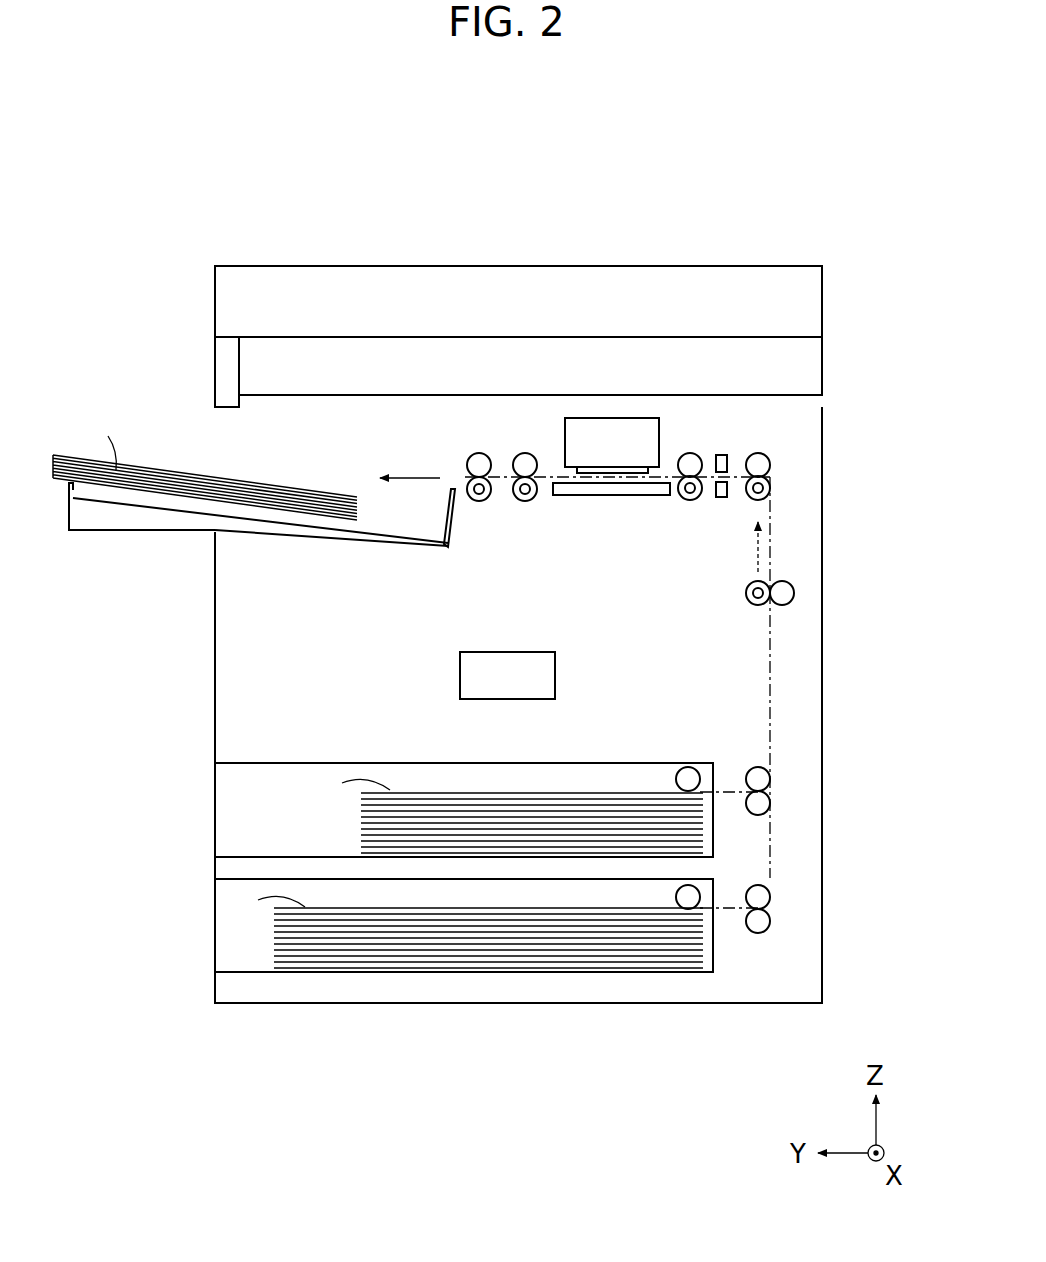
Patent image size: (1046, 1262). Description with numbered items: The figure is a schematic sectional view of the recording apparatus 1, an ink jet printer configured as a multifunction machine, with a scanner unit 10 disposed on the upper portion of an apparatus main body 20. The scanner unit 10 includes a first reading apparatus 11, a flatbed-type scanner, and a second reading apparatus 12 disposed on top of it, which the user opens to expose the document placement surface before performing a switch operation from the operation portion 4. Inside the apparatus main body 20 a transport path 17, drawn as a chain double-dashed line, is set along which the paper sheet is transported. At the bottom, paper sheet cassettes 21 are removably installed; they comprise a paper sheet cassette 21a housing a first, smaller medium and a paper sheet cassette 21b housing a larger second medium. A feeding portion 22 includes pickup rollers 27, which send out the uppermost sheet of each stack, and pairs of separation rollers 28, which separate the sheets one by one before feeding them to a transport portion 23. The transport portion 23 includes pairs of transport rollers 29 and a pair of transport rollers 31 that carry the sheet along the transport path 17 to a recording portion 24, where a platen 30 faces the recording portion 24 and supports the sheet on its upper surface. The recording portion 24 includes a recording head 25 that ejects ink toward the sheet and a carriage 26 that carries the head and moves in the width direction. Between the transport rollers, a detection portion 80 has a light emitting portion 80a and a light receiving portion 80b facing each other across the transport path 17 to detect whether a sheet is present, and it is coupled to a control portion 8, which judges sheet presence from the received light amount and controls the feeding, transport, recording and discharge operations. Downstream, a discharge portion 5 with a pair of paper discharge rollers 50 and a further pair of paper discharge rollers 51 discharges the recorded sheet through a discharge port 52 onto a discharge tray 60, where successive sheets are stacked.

The recording apparatus 1 is at (832, 145).
The operation portion 4 is at (220, 360).
The discharge portion 5 is at (505, 552).
The control portion 8 is at (548, 672).
The scanner unit 10 is at (898, 312).
The first reading apparatus 11 is at (822, 358).
The second reading apparatus 12 is at (822, 322).
The transport path 17 is at (770, 660).
The apparatus main body 20 is at (822, 556).
The paper sheet cassettes 21 is at (386, 867).
The paper sheet cassette 21a is at (215, 805).
The paper sheet cassette 21b is at (414, 925).
The feeding portion 22 is at (782, 842).
The transport portion 23 is at (677, 523).
The recording portion 24 is at (598, 342).
The recording head 25 is at (585, 468).
The carriage 26 is at (632, 432).
The pickup rollers 27 is at (686, 768).
The pairs of separation rollers 28 is at (768, 770).
The pairs of transport rollers 29 is at (772, 488).
The platen 30 is at (585, 498).
The pair of transport rollers 31 is at (685, 497).
The pair of paper discharge rollers 50 is at (525, 501).
The pair of paper discharge rollers 51 is at (479, 501).
The discharge port 52 is at (448, 488).
The discharge tray 60 is at (262, 563).
The detection portion 80 is at (681, 519).
The light emitting portion 80a is at (720, 455).
The light receiving portion 80b is at (715, 500).